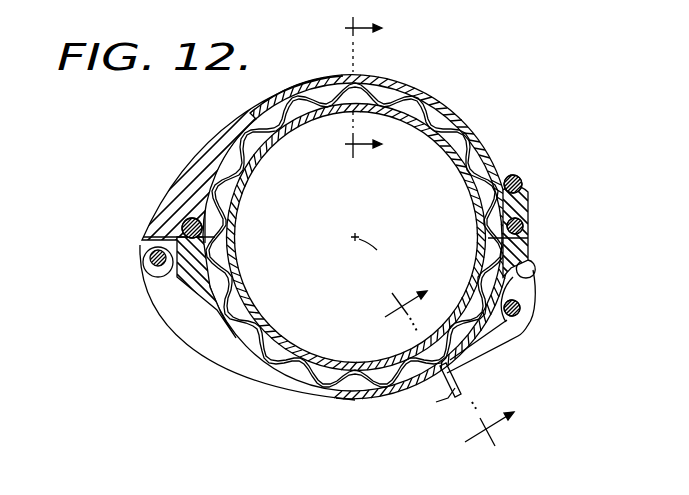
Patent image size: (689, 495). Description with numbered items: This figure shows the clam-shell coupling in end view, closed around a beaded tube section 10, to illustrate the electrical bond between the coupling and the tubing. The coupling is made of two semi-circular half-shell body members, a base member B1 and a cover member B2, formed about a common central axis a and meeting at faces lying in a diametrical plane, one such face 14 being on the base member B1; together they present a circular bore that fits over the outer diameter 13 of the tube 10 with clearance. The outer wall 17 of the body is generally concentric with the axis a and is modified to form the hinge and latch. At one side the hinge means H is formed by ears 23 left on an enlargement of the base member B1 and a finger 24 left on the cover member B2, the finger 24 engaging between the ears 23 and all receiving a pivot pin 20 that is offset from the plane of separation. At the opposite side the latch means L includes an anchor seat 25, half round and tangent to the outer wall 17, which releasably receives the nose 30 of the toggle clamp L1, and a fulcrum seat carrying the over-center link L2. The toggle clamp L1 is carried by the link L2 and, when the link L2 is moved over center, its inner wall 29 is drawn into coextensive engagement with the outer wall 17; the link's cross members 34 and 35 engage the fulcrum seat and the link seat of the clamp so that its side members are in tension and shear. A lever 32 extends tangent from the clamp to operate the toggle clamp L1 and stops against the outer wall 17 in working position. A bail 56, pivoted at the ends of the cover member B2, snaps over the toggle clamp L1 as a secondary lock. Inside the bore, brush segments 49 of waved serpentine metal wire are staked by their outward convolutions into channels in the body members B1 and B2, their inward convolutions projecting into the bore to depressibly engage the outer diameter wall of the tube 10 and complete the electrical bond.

The beaded tube section 10 is at (435, 108).
The brush segments 49 is at (462, 130).
The cross member 34 is at (518, 177).
The over-center link L2 is at (532, 183).
The nose 30 is at (530, 247).
The anchor seat 25 is at (540, 278).
The latch means L is at (543, 285).
The inner wall 29 is at (527, 293).
The cross member 35 is at (521, 313).
The outer wall 17 is at (530, 330).
The toggle clamp L1 is at (522, 350).
The lever 32 is at (482, 358).
The bail 56 is at (436, 410).
The central axis a is at (367, 253).
The outer diameter 13 is at (342, 92).
The face 14 is at (423, 382).
The hinge means H is at (140, 252).
The finger 24 is at (143, 237).
The pivot pin 20 is at (140, 256).
The ears 23 is at (157, 287).
The cover member B2 is at (211, 135).
The base member B1 is at (176, 340).